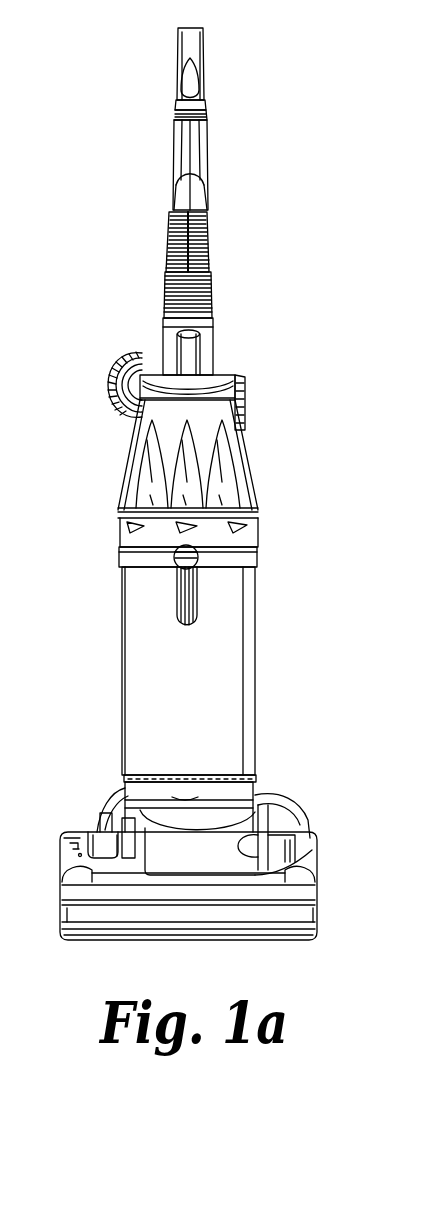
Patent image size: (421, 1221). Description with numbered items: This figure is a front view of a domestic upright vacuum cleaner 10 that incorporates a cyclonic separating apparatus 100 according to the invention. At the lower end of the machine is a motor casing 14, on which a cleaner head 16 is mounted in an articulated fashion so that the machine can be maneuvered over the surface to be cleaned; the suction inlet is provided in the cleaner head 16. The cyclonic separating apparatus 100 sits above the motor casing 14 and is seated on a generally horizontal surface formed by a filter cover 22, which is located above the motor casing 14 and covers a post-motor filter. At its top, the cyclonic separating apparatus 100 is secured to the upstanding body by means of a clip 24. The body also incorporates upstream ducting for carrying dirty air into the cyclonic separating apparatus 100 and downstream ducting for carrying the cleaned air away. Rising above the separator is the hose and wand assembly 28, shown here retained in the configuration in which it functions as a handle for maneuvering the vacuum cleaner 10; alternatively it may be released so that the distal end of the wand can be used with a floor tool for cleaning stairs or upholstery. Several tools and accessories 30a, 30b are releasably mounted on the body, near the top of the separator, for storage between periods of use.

The vacuum cleaner 10 is at (273, 220).
The hose and wand assembly 28 is at (182, 158).
The clip 24 is at (205, 336).
The tool/accessory 30a is at (132, 360).
The tool/accessory 30b is at (242, 393).
The cyclonic separating apparatus 100 is at (279, 548).
The filter cover 22 is at (120, 778).
The motor casing 14 is at (272, 832).
The cleaner head 16 is at (66, 890).